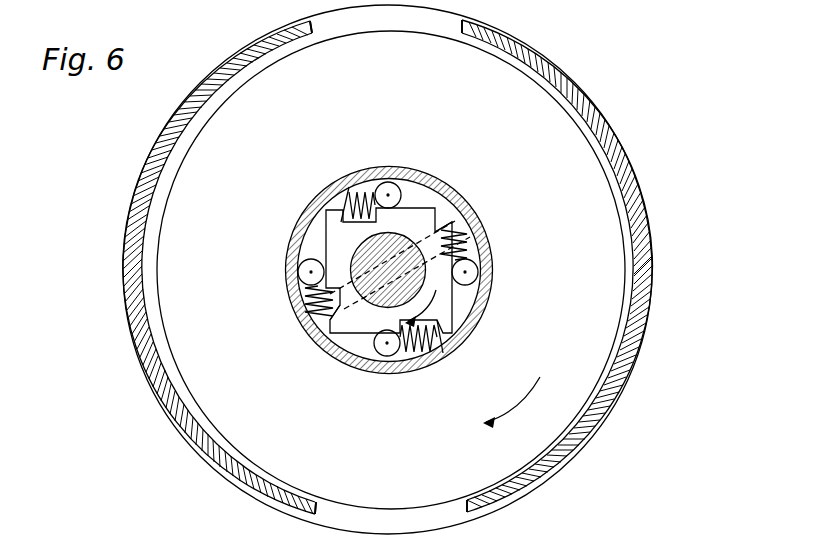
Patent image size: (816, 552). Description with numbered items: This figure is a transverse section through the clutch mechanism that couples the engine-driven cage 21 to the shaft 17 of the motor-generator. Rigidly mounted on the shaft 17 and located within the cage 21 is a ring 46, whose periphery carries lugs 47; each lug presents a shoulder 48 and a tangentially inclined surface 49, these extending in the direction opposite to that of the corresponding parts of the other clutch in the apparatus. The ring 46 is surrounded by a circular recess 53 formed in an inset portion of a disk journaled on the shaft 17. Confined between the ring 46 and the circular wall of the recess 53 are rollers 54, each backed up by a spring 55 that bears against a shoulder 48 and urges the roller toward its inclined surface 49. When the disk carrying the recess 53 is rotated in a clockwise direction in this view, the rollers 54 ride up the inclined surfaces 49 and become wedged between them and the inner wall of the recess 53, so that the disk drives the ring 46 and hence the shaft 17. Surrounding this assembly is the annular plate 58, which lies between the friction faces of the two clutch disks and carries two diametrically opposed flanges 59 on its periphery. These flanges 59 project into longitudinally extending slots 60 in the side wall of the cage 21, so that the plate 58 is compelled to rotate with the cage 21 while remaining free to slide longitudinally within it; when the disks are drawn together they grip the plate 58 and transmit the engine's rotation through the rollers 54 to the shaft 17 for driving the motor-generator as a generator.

The shaft 17 is at (358, 249).
The cage 21 is at (643, 337).
The ring 46 is at (410, 220).
The lugs 47 is at (452, 333).
The shoulders 48 is at (453, 223).
The inclined surfaces 49 is at (443, 188).
The circular recess 53 is at (472, 297).
The rollers 54 is at (390, 353).
The springs 55 is at (308, 310).
The annular plate 58 is at (603, 275).
The flanges 59 is at (418, 515).
The slots 60 is at (459, 520).